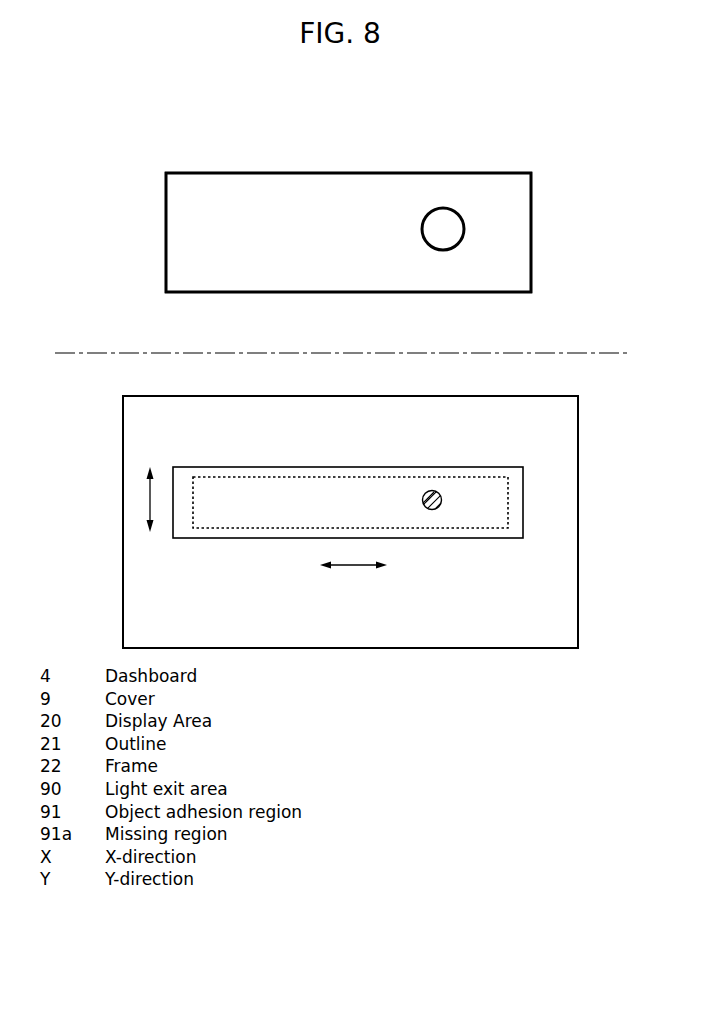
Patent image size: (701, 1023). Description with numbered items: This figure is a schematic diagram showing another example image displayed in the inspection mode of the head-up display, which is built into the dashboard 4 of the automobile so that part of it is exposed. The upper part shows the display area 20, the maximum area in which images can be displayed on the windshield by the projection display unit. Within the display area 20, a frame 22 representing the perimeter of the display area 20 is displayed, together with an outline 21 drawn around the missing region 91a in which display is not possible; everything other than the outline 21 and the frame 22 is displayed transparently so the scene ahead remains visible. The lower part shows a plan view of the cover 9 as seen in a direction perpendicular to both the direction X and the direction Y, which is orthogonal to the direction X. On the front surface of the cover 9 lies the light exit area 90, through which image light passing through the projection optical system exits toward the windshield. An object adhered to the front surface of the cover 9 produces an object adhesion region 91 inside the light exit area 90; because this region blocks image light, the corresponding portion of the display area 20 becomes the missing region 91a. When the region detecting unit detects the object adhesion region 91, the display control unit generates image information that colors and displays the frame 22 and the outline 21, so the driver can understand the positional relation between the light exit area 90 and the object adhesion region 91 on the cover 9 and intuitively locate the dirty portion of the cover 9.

The dashboard 4 is at (148, 395).
The cover 9 is at (513, 490).
The display area 20 is at (310, 165).
The outline 21 is at (463, 216).
The frame 22 is at (487, 172).
The light exit area 90 is at (478, 529).
The object adhesion region 91 is at (430, 510).
The missing region 91a is at (441, 237).
The direction X is at (353, 556).
The direction Y is at (156, 499).